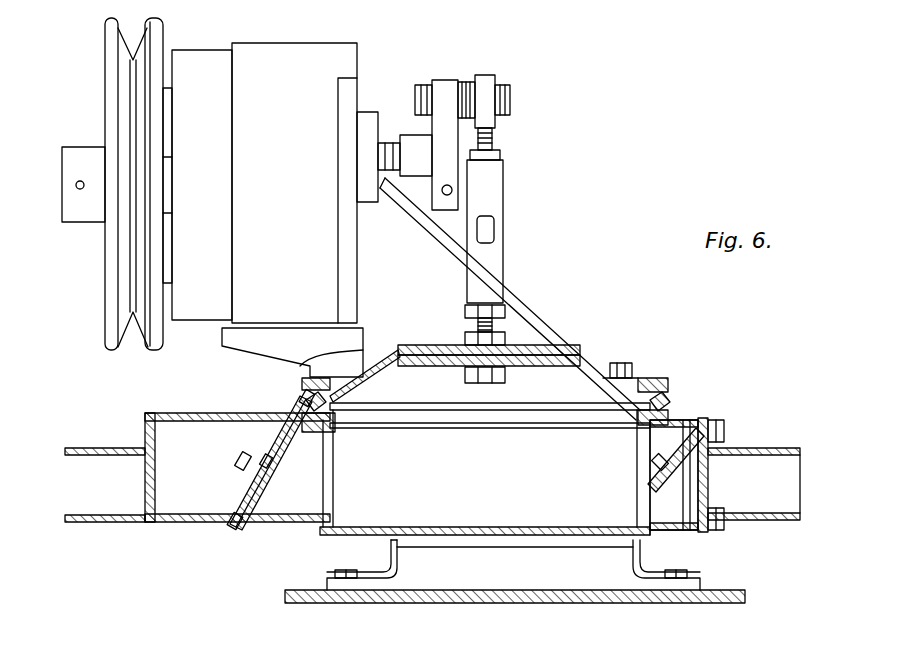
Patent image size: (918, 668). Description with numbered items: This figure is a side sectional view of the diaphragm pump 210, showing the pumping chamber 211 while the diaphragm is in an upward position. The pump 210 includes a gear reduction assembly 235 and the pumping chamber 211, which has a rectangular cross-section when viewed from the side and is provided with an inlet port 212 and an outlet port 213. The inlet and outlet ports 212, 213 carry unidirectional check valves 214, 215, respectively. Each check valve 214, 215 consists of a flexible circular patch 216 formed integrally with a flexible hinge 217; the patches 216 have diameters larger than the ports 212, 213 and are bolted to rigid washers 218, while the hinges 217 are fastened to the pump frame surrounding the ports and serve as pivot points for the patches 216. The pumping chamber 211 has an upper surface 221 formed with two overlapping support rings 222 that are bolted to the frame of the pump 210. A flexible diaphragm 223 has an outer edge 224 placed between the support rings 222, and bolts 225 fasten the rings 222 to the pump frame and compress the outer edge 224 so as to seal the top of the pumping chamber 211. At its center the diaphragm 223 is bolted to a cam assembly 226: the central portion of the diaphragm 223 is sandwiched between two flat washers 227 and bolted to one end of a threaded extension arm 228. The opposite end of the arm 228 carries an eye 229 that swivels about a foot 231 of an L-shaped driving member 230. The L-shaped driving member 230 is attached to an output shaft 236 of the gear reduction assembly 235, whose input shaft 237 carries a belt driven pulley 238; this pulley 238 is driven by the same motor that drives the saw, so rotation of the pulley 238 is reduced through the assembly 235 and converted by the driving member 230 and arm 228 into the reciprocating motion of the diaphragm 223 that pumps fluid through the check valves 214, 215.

The diaphragm pump 210 is at (592, 116).
The pumping chamber 211 is at (515, 507).
The inlet port 212 is at (733, 488).
The outlet port 213 is at (185, 471).
The check valve 214 is at (688, 428).
The check valve 215 is at (235, 483).
The flexible circular patch 216 is at (258, 480).
The flexible hinge 217 is at (257, 420).
The rigid washer 218 is at (257, 442).
The upper surface 221 is at (567, 378).
The support ring 222 is at (300, 412).
The flexible diaphragm 223 is at (643, 380).
The outer edge 224 is at (668, 402).
The bolt 225 is at (617, 360).
The cam assembly 226 is at (552, 163).
The flat washer 227 is at (517, 360).
The threaded extension arm 228 is at (497, 207).
The eye 229 is at (483, 72).
The L-shaped driving member 230 is at (433, 127).
The foot 231 is at (510, 103).
The gear reduction assembly 235 is at (306, 42).
The output shaft 236 is at (402, 140).
The input shaft 237 is at (167, 177).
The belt driven pulley 238 is at (106, 34).